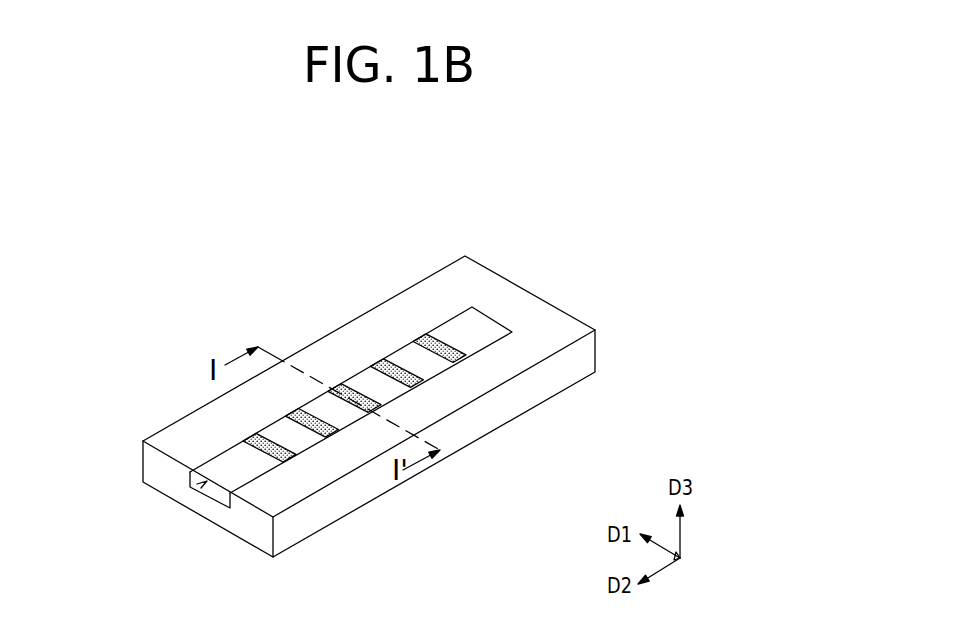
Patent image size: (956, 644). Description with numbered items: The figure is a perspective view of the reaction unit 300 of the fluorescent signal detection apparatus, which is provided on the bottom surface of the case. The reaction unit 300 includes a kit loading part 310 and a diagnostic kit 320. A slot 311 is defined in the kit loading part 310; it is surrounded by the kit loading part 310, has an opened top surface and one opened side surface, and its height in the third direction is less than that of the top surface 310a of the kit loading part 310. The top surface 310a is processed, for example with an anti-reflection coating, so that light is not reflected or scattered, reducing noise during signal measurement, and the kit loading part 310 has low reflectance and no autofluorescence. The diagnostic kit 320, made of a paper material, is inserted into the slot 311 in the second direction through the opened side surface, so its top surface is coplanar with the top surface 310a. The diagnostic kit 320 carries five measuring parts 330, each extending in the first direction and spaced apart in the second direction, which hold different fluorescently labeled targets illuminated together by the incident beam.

The reaction unit 300 is at (695, 200).
The kit loading part 310 is at (585, 355).
The top surface of the kit loading part 310a is at (440, 282).
The slot 311 is at (492, 315).
The measuring parts 330 is at (377, 367).
The diagnostic kit 320 is at (195, 485).